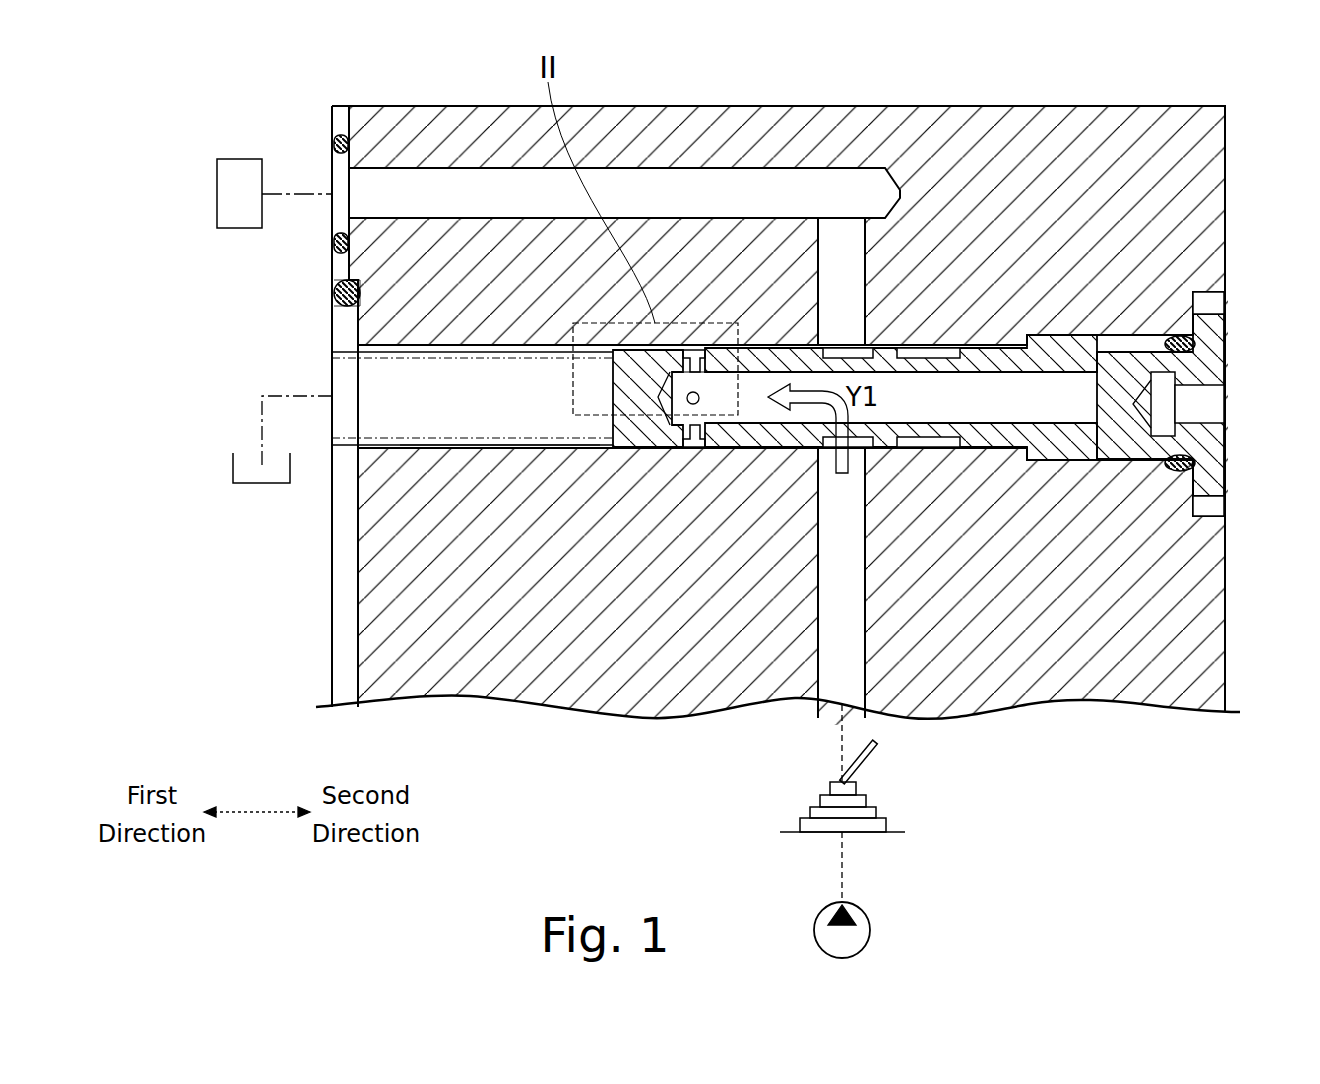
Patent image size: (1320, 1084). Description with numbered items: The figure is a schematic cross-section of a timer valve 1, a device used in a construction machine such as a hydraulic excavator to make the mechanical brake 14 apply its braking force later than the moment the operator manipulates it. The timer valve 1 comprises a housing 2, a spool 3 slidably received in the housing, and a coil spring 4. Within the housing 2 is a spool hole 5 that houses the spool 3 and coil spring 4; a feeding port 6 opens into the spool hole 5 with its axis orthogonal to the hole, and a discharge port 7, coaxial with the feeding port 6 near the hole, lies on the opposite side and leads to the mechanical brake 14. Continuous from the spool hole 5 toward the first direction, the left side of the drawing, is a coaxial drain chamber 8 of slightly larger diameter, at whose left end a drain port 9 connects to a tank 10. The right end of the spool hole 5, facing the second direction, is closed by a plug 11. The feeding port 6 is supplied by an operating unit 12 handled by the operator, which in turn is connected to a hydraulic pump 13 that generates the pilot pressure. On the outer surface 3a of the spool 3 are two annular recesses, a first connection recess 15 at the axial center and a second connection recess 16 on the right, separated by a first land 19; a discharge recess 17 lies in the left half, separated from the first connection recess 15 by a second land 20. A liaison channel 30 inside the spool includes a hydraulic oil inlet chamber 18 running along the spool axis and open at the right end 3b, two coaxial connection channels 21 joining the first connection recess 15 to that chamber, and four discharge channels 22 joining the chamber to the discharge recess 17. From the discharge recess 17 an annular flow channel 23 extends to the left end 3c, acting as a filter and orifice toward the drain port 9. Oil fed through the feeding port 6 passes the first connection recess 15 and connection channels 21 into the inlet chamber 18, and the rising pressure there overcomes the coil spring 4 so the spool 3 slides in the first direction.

The timer valve 1 is at (1185, 106).
The housing 2 is at (510, 695).
The spool 3 is at (748, 450).
The outer surface of the spool 3a is at (687, 450).
The end of the spool facing the second direction 3b is at (1125, 335).
The end of the spool facing the first direction 3c is at (612, 378).
The coil spring 4 is at (492, 450).
The spool hole 5 is at (1003, 450).
The feeding port 6 is at (860, 450).
The discharge port 7 is at (793, 182).
The drain chamber 8 is at (570, 450).
The drain port 9 is at (336, 296).
The tank 10 is at (262, 485).
The plug 11 is at (1226, 320).
The operating unit 12 is at (878, 815).
The hydraulic pump 13 is at (871, 928).
The mechanical brake 14 is at (240, 159).
The first connection recess 15 is at (862, 348).
The second connection recess 16 is at (928, 348).
The discharge recess 17 is at (686, 348).
The hydraulic oil inlet chamber 18 is at (1100, 468).
The first land 19 is at (885, 450).
The second land 20 is at (748, 348).
The connection channels 21 is at (826, 345).
The discharge channels 22 is at (667, 450).
The flow channel 23 is at (700, 346).
The liaison channel 30 is at (1160, 400).